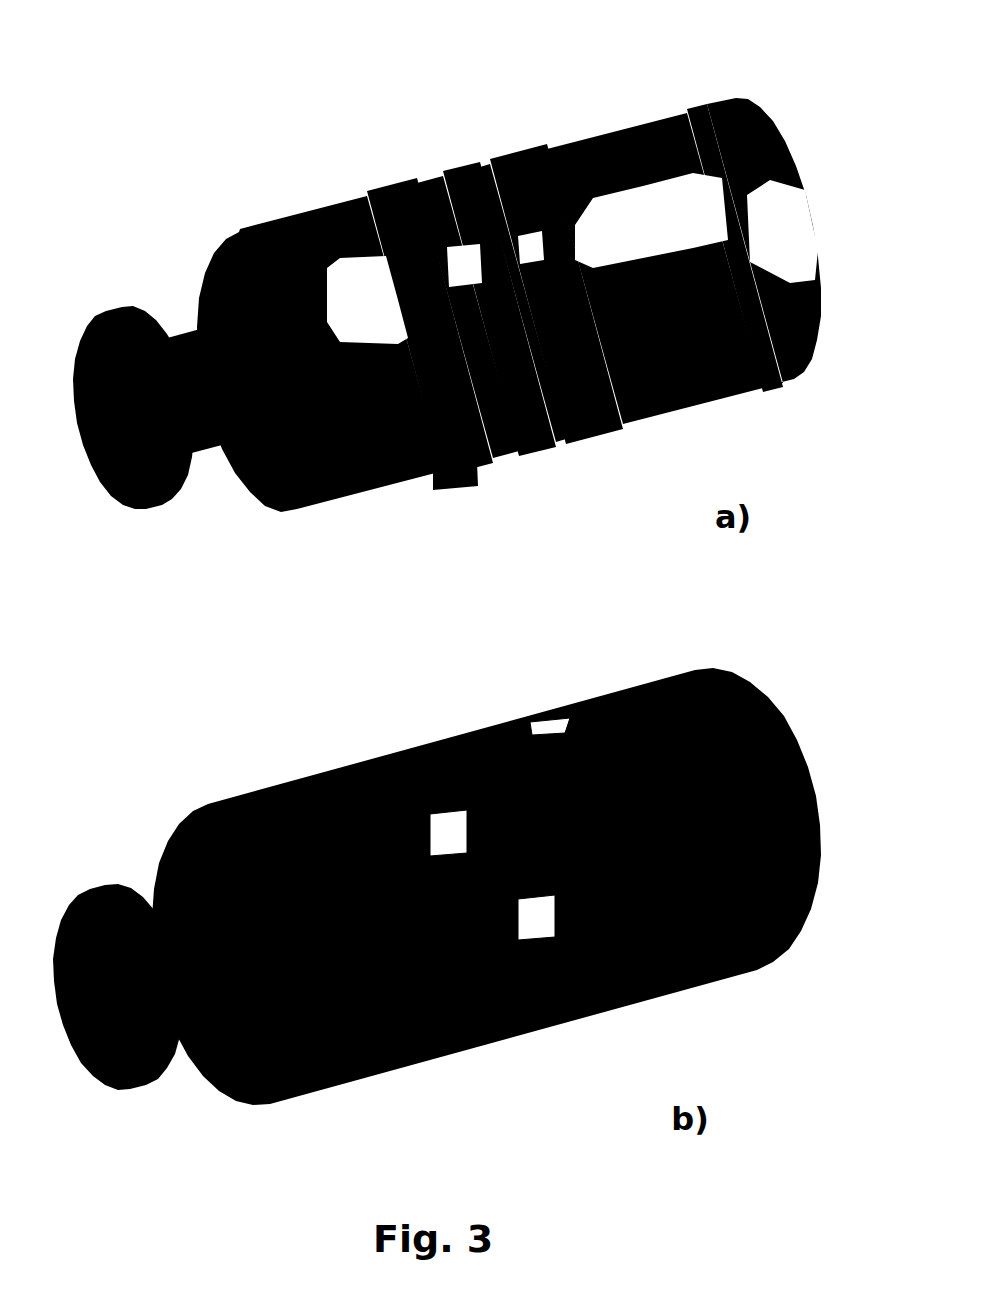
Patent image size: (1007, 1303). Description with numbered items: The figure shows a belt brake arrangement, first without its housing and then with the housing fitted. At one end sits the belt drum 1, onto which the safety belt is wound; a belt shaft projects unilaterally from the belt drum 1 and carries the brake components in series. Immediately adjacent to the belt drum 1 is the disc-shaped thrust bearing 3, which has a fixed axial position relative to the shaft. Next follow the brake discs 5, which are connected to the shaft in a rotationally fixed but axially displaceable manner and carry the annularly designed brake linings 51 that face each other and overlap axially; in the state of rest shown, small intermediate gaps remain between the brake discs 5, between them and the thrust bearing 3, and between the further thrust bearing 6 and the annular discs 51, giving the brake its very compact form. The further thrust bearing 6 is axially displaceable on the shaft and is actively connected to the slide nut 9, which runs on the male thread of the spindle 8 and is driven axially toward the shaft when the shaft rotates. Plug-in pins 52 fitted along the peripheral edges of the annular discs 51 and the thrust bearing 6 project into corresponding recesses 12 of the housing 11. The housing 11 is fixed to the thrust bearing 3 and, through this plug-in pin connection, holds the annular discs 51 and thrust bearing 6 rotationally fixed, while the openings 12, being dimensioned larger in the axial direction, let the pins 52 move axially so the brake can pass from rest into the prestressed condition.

In FIG. 3a, the belt drum 1 is at (180, 335).
In FIG. 3a, the thrust bearing 3 is at (290, 228).
In FIG. 3a, the brake discs 5 is at (368, 203).
In FIG. 3a, the brake linings 51 is at (467, 187).
In FIG. 3a, the plug-in pins 52 is at (453, 472).
In FIG. 3a, the thrust bearing 6 is at (572, 215).
In FIG. 3a, the slide nut 9 is at (647, 145).
In FIG. 3a, the spindle 8 is at (700, 117).
In FIG. 3b, the housing 11 is at (332, 770).
In FIG. 3b, the recesses 12 is at (517, 715).